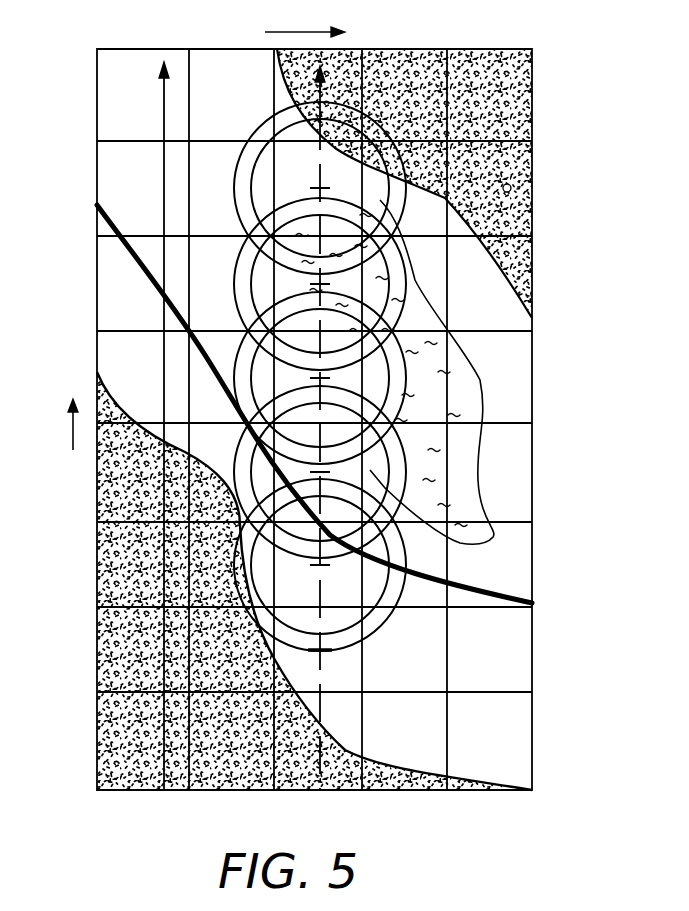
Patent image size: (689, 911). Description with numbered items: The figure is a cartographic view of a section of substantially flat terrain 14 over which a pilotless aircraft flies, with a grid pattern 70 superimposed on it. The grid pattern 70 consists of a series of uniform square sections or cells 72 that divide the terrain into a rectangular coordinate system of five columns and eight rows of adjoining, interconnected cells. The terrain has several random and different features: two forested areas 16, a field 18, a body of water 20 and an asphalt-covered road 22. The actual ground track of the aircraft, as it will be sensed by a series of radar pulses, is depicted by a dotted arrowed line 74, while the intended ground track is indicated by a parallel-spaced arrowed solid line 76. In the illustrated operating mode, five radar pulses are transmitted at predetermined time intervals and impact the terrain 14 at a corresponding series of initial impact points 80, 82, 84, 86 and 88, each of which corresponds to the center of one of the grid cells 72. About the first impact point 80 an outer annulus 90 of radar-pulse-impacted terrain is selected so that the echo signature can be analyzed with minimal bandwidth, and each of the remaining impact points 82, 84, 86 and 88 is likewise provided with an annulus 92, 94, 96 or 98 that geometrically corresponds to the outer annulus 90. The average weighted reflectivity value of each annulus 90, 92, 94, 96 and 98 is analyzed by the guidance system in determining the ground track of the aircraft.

The terrain 14 is at (108, 572).
The forested areas 16 is at (512, 186).
The field 18 is at (522, 658).
The body of water 20 is at (488, 380).
The asphalt-covered road 22 is at (497, 595).
The grid pattern 70 is at (534, 92).
The grid cells 72 is at (140, 58).
The actual ground track 74 is at (320, 683).
The intended ground track 76 is at (158, 652).
The initial impact point 80 is at (318, 568).
The initial impact point 82 is at (340, 476).
The initial impact point 84 is at (345, 382).
The initial impact point 86 is at (318, 287).
The initial impact point 88 is at (317, 185).
The outer annulus 90 is at (237, 585).
The annulus 92 is at (237, 462).
The annulus 94 is at (418, 313).
The annulus 96 is at (398, 240).
The annulus 98 is at (380, 136).